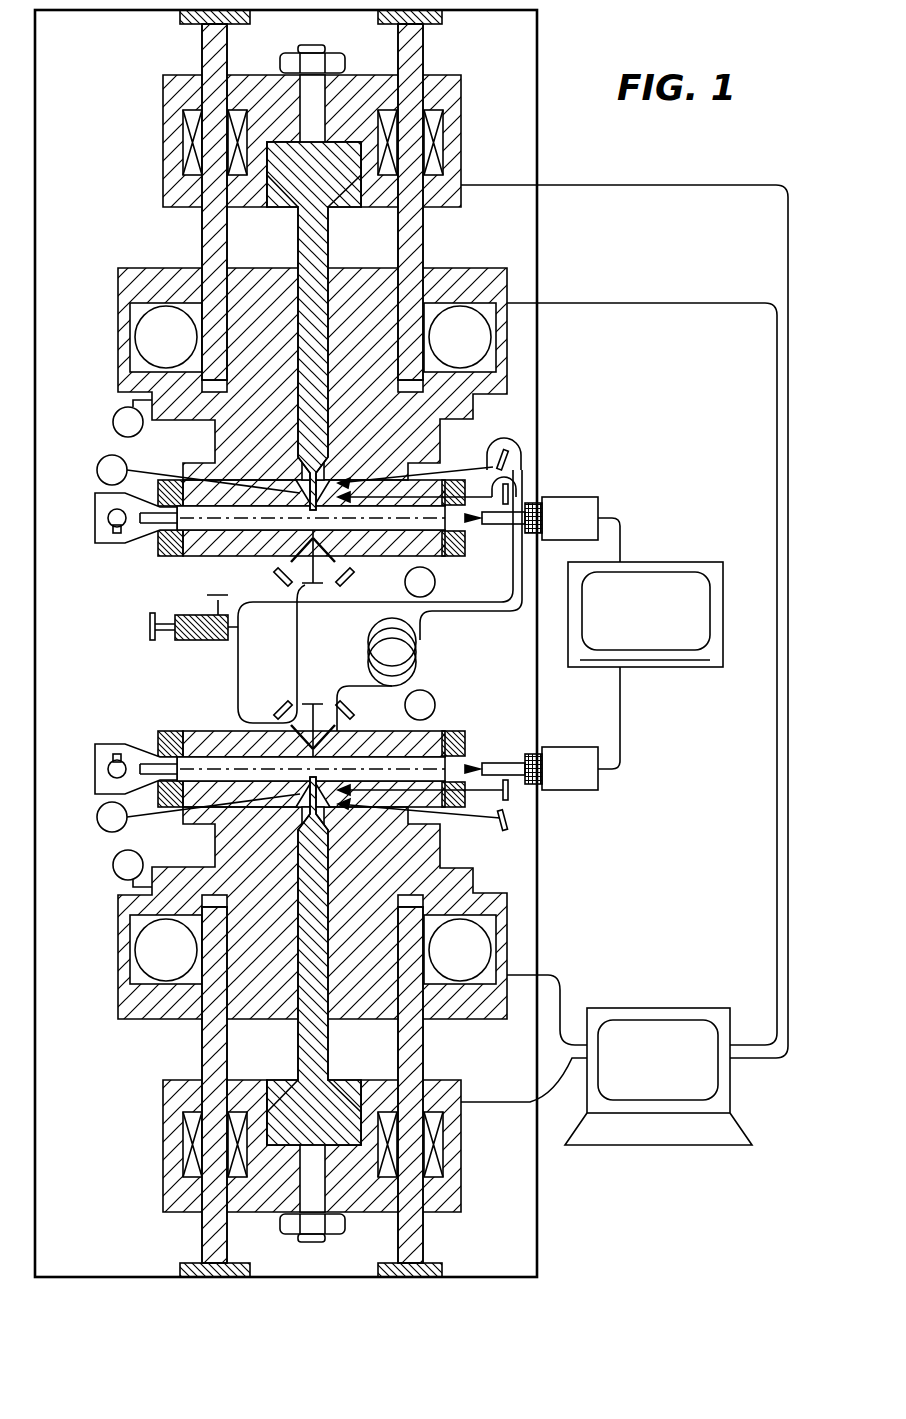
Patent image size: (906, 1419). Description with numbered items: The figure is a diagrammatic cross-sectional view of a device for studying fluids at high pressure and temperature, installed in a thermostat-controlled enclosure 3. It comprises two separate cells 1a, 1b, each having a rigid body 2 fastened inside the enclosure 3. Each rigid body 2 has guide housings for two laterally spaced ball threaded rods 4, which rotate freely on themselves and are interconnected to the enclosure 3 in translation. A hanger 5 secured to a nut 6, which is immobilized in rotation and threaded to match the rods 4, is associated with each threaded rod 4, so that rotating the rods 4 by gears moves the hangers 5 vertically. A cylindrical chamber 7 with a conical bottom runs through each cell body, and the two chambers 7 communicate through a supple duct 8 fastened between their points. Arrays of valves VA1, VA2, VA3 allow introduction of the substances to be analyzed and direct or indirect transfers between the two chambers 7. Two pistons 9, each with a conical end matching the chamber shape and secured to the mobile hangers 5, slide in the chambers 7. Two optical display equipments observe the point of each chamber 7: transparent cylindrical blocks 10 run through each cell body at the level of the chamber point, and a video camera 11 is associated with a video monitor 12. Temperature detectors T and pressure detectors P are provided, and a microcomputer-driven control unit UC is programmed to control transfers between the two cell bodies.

The cell 1a is at (112, 285).
The cell 1b is at (112, 1002).
The rigid body 2 is at (120, 352).
The thermostat-controlled enclosure 3 is at (537, 68).
The ball threaded rod 4 is at (215, 244).
The hanger 5 is at (178, 108).
The nut 6 is at (188, 146).
The cylindrical chamber 7 is at (300, 490).
The supple duct 8 is at (297, 655).
The piston 9 is at (310, 244).
The transparent cylindrical block 10 is at (175, 546).
The video camera 11 is at (590, 500).
The video monitor 12 is at (670, 578).
The control unit UC is at (698, 1008).
The valve VA1 is at (283, 704).
The valve VA2 is at (283, 586).
The valve VA3 is at (512, 460).
The pressure detector P is at (198, 643).
The temperature detector T is at (274, 643).